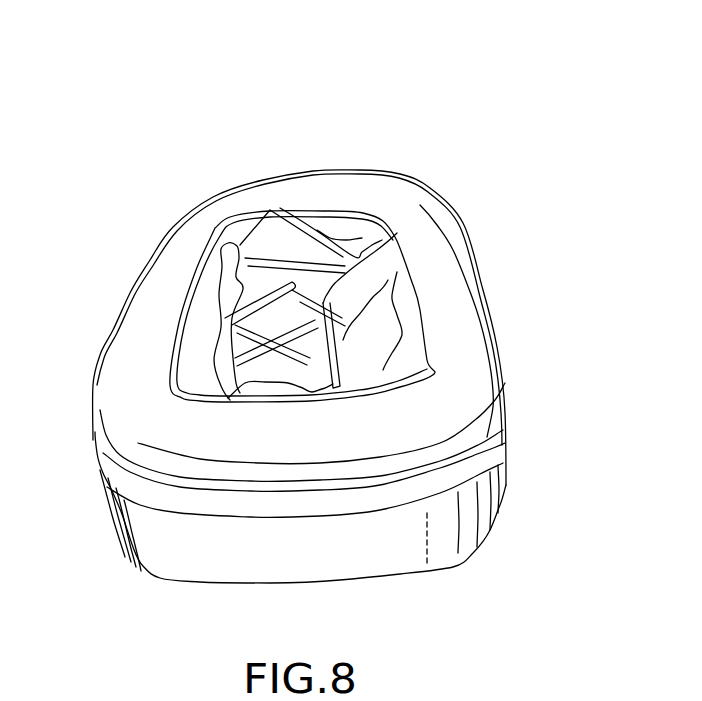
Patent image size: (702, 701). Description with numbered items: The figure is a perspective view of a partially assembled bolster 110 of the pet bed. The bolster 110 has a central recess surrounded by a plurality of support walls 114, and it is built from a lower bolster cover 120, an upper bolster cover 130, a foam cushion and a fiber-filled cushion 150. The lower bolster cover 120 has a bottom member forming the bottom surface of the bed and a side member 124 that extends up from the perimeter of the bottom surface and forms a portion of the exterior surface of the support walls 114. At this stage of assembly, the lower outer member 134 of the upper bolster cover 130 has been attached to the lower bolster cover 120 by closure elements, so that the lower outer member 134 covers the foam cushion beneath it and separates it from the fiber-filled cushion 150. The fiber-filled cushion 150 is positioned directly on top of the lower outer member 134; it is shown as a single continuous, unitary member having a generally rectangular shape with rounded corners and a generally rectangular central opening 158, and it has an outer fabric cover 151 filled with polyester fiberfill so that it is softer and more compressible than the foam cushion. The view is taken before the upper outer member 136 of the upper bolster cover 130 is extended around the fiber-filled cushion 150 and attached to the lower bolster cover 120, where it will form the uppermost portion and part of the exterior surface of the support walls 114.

The bolster 110 is at (170, 106).
The support walls 114 is at (393, 568).
The lower bolster cover 120 is at (237, 568).
The side member 124 is at (327, 567).
The lower outer member 134 is at (468, 472).
The fiber-filled cushion 150 is at (363, 187).
The outer fabric cover 151 is at (427, 283).
The central opening 158 is at (204, 298).
The upper bolster cover 130 is at (252, 303).
The upper outer member 136 is at (373, 290).